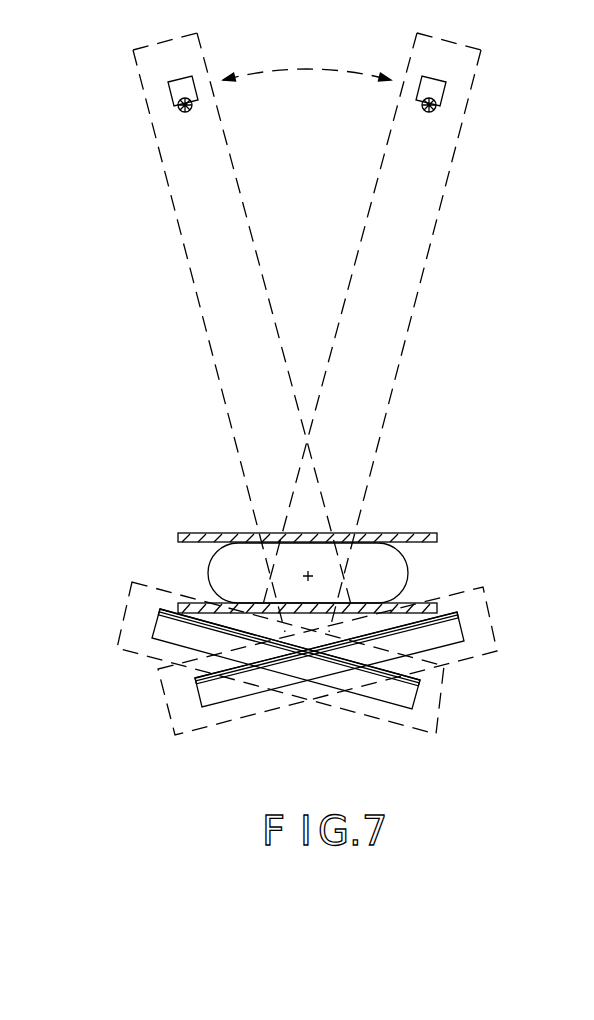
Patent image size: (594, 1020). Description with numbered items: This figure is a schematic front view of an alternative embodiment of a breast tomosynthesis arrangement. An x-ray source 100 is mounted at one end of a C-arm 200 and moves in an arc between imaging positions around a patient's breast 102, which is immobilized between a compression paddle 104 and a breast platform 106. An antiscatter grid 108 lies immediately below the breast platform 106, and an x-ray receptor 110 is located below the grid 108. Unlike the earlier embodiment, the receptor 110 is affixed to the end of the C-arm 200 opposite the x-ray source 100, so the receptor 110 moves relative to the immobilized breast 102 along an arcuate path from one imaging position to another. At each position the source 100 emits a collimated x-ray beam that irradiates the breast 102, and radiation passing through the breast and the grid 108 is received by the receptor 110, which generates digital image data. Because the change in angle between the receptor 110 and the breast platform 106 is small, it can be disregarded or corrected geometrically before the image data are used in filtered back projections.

The x-ray source 100 is at (178, 108).
The C-arm 200 is at (193, 252).
The patient's breast 102 is at (404, 560).
The compression paddle 104 is at (413, 540).
The breast platform 106 is at (410, 603).
The antiscatter grid 108 is at (447, 610).
The x-ray receptor 110 is at (460, 633).